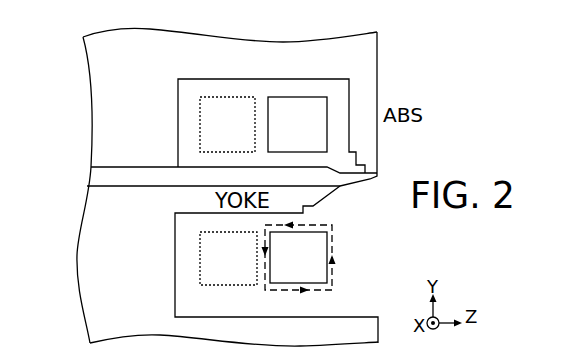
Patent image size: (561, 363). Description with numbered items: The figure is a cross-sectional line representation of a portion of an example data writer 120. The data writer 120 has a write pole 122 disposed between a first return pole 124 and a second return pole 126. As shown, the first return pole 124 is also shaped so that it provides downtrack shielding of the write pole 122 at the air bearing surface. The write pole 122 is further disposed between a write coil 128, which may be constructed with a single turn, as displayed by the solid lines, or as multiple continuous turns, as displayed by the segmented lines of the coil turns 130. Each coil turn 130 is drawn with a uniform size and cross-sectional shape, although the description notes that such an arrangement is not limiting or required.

The data writer 120 is at (79, 29).
The write pole 122 is at (143, 160).
The first return pole 124 is at (373, 58).
The second return pole 126 is at (370, 338).
The write coil 128 is at (312, 132).
The coil turn 130 is at (243, 132).